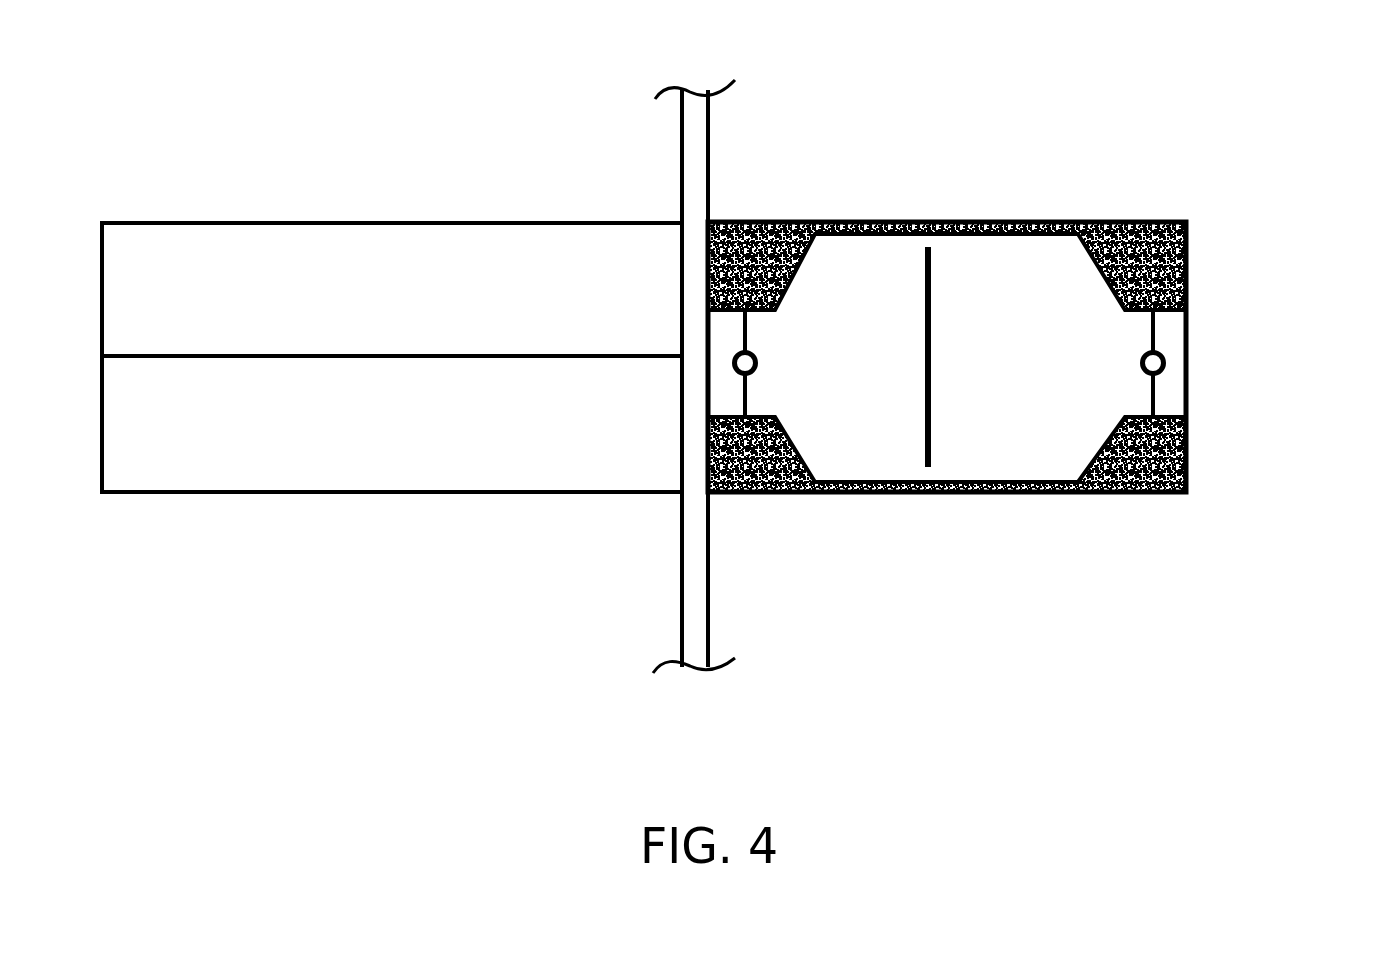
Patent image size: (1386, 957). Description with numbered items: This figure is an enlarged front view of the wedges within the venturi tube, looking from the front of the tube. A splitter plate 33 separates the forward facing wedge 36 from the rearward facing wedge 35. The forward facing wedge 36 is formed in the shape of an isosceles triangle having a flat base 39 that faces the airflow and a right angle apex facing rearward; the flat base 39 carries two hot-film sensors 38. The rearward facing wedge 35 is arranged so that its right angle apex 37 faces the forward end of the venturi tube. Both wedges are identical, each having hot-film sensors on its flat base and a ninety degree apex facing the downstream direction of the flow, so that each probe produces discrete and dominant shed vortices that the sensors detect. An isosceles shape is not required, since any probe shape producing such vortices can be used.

The splitter plate 33 is at (710, 563).
The rearward facing wedge 35 is at (420, 492).
The forward facing wedge 36 is at (948, 222).
The right angle apex 37 is at (412, 355).
The hot-film sensors 38 is at (1148, 495).
The flat base 39 is at (1190, 363).